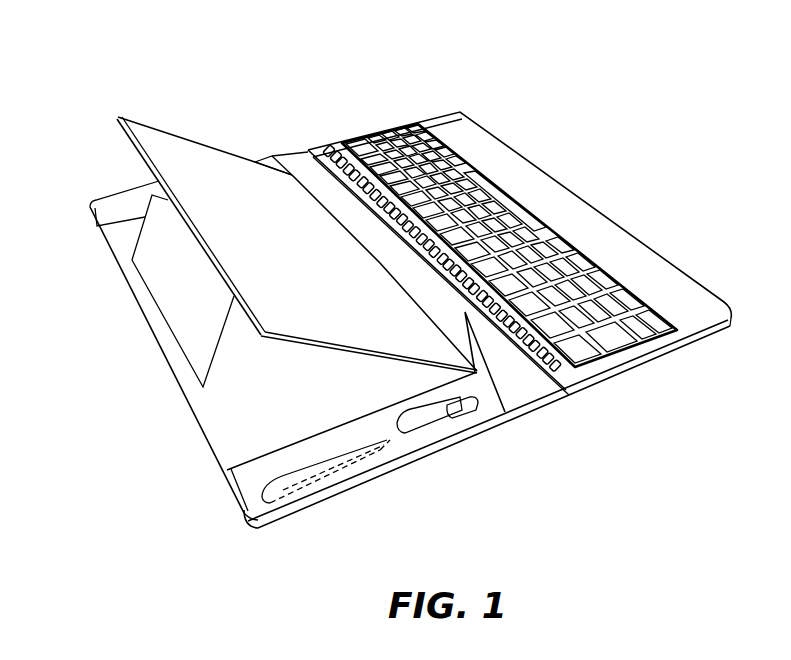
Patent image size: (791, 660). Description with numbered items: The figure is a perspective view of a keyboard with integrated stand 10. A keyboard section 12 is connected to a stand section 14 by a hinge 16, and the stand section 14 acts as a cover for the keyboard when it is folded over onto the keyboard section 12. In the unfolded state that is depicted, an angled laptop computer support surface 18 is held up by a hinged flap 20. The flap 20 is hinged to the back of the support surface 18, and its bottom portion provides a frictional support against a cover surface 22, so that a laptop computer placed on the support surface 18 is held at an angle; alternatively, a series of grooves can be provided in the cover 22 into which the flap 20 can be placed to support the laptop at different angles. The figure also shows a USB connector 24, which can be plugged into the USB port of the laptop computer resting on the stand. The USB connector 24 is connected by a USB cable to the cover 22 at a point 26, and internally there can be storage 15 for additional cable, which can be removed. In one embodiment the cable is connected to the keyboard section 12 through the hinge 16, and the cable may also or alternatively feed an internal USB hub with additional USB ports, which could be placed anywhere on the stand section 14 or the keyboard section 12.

The keyboard with integrated stand 10 is at (333, 120).
The keyboard section 12 is at (653, 358).
The stand section 14 is at (424, 478).
The storage 15 is at (345, 482).
The hinge 16 is at (548, 430).
The angled laptop computer support surface 18 is at (143, 112).
The hinged flap 20 is at (177, 278).
The cover surface 22 is at (178, 401).
The USB connector 24 is at (466, 412).
The point 26 is at (243, 515).